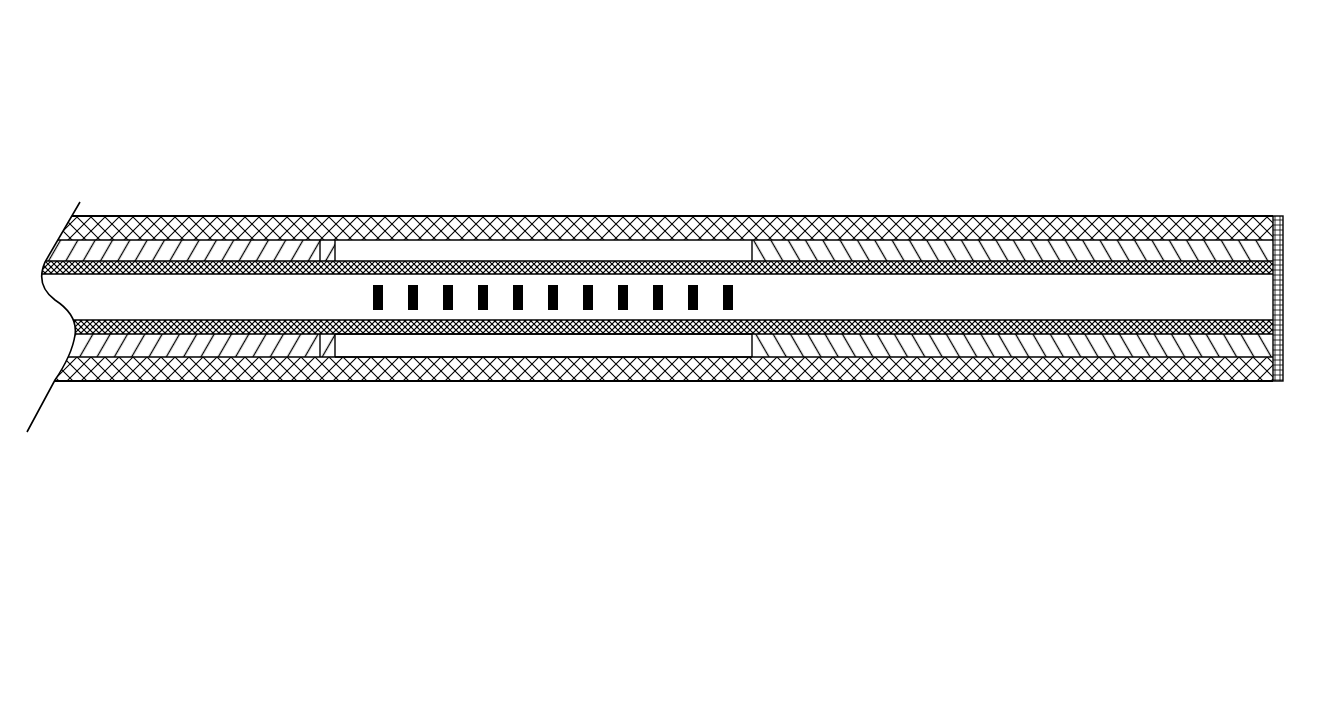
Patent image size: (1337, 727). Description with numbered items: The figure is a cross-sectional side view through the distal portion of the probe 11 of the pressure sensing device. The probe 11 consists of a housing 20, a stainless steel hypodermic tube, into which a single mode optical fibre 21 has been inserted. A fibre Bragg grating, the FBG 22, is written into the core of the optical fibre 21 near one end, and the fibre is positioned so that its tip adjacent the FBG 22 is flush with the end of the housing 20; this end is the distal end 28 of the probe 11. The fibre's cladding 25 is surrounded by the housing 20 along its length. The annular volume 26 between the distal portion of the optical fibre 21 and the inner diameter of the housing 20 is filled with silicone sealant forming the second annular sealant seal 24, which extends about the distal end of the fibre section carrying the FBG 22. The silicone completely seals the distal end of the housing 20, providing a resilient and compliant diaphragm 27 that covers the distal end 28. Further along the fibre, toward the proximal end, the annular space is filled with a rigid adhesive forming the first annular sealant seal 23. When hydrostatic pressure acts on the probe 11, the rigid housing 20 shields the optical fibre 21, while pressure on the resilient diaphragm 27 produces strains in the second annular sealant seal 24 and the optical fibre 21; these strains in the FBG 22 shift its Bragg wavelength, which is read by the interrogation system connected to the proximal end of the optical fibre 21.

The probe 11 is at (708, 112).
The housing 20 is at (775, 240).
The optical fibre 21 is at (797, 262).
The FBG 22 is at (747, 295).
The first annular sealant seal 23 is at (182, 237).
The second annular sealant seal 24 is at (998, 240).
The cladding 25 is at (313, 247).
The annular volume 26 is at (523, 370).
The diaphragm 27 is at (1285, 296).
The distal end 28 is at (1255, 172).